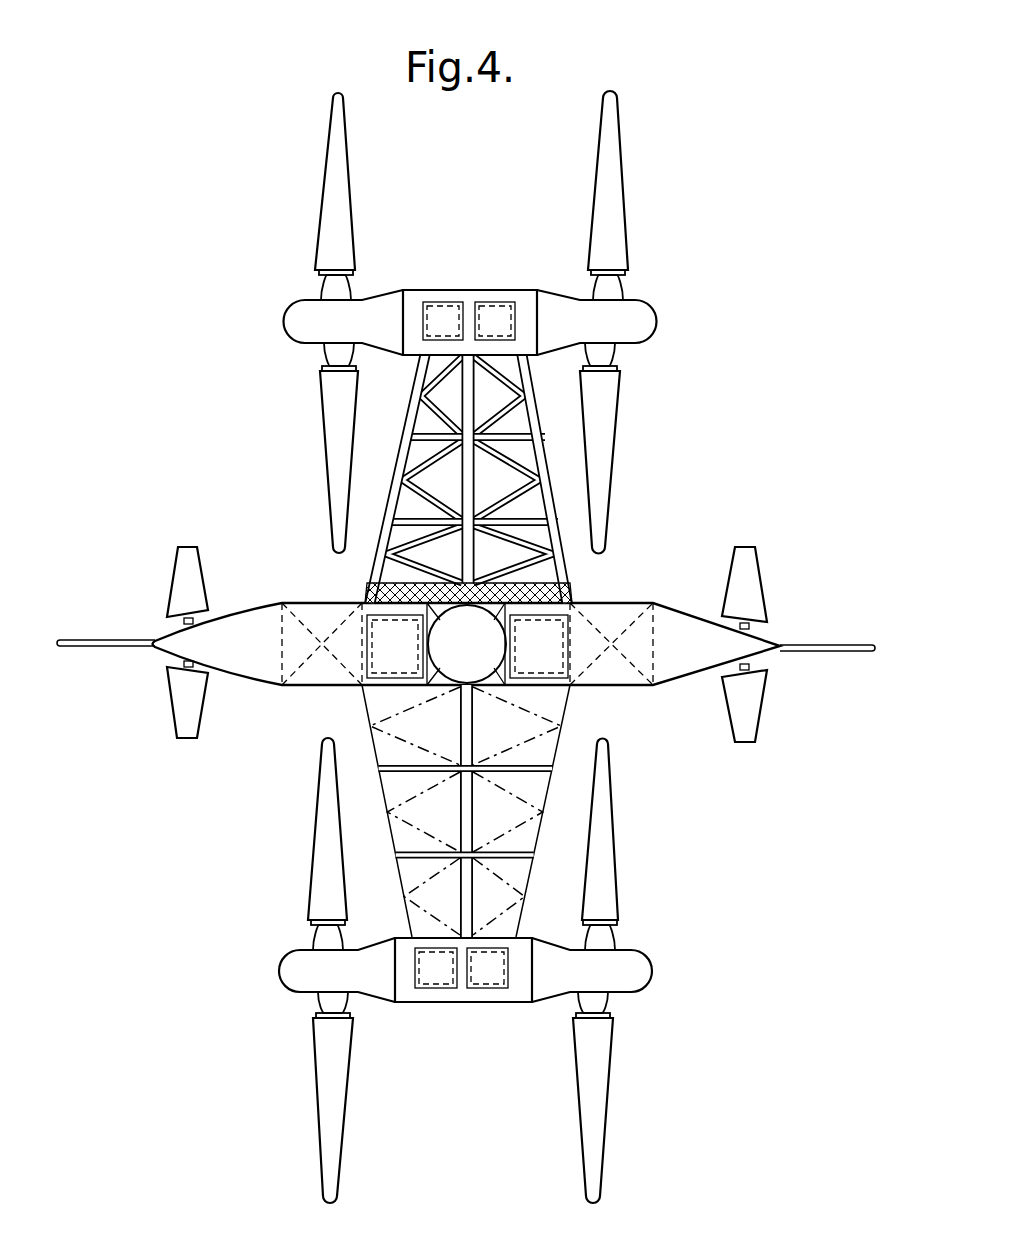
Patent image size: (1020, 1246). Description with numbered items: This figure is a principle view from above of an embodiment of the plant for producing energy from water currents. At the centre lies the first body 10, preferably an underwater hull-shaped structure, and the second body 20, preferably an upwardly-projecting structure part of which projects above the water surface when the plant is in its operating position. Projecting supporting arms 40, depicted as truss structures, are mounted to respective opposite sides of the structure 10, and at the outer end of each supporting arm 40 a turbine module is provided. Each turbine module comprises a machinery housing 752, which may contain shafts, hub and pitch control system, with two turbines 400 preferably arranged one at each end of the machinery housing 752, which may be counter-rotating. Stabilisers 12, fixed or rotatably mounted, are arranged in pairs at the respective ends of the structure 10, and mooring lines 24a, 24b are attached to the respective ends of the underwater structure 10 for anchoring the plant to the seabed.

The first body 10 is at (643, 583).
The stabilisers 12 is at (175, 571).
The second body 20 is at (478, 656).
The mooring line 24a is at (92, 647).
The mooring line 24b is at (840, 646).
The supporting arms 40 is at (509, 494).
The turbines 400 is at (347, 124).
The machinery housing 752 is at (461, 290).